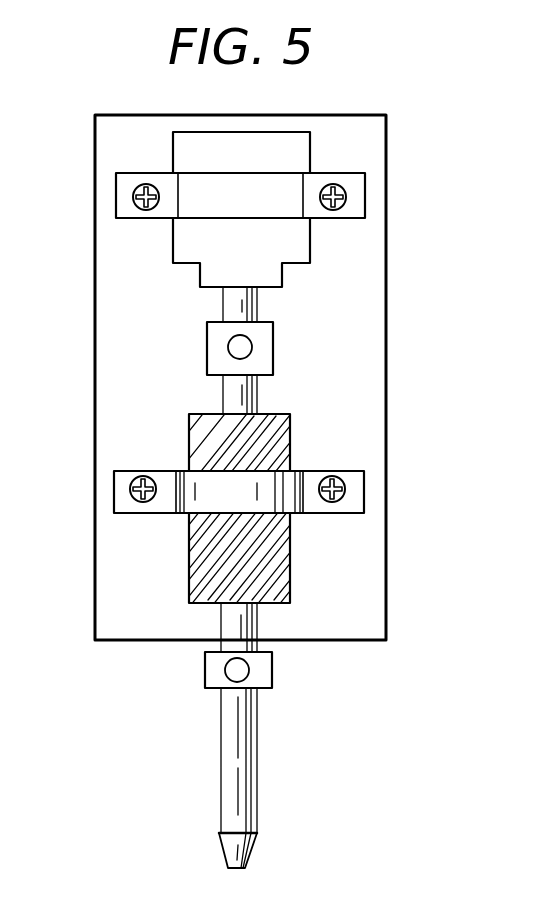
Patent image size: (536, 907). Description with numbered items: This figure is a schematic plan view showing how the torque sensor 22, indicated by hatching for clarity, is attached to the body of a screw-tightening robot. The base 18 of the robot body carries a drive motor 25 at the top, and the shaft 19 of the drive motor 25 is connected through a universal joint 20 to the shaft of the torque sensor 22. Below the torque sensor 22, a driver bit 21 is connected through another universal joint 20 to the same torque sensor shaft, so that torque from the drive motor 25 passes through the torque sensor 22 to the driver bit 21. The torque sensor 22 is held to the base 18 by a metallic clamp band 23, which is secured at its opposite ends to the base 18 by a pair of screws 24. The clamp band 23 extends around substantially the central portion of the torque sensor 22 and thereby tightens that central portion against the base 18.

The base 18 is at (368, 588).
The shaft 19 is at (228, 308).
The universal joint 20 is at (263, 345).
The driver bit 21 is at (228, 782).
The torque sensor 22 is at (198, 432).
The metallic clamp band 23 is at (283, 480).
The screws 24 is at (130, 484).
The drive motor 25 is at (295, 153).